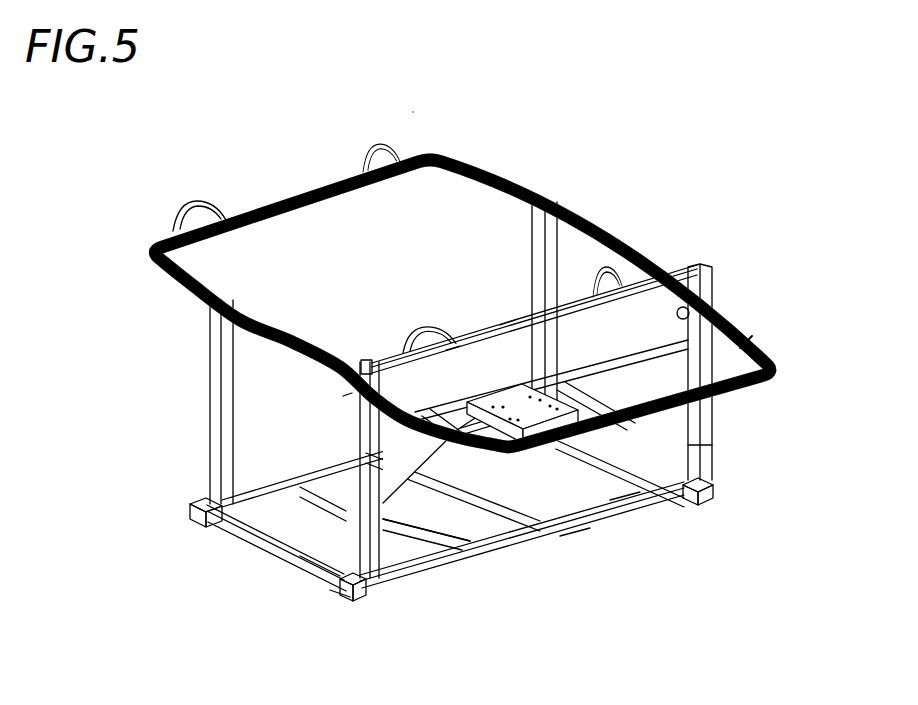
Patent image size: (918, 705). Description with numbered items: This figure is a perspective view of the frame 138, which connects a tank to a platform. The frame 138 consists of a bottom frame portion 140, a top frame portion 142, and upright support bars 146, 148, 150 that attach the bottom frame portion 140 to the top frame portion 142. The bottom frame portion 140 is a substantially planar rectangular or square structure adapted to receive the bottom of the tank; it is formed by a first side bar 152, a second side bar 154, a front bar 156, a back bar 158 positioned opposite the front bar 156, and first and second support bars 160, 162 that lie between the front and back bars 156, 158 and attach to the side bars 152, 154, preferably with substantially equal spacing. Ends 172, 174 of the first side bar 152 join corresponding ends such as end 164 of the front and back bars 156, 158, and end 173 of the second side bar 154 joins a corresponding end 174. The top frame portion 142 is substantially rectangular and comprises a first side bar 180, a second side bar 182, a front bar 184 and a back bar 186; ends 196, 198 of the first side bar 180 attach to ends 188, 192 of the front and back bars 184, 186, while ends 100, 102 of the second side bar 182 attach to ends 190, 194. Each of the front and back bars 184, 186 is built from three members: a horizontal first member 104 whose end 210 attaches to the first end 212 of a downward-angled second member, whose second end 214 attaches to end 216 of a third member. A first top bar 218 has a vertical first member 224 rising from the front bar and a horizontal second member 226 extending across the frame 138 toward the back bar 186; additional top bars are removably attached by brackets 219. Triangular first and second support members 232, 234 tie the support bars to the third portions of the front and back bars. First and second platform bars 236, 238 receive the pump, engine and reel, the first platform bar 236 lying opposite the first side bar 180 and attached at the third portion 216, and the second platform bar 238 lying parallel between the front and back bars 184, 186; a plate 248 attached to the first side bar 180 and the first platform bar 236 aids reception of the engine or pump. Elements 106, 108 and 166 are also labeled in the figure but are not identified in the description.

The end of second side bar 100 is at (166, 232).
The end of second side bar 102 is at (433, 148).
The first member 104 is at (190, 280).
The handle rear segment 106 is at (567, 213).
The panel 108 is at (407, 413).
The frame 138 is at (413, 108).
The bottom frame portion 140 is at (190, 575).
The top frame portion 142 is at (690, 212).
The support bar 146 is at (713, 462).
The support bar 148 is at (207, 440).
The support bar 150 is at (532, 225).
The first side bar 152 is at (612, 534).
The second side bar 154 is at (337, 460).
The front bar 156 is at (285, 566).
The back bar 158 is at (713, 452).
The first support bar 160 is at (233, 543).
The second support bar 162 is at (483, 520).
The end of front bar 164 is at (341, 592).
The right base member 166 is at (713, 482).
The end of first side bar 172 is at (352, 588).
The end of second side bar 173 is at (192, 500).
The end of first side bar 174 is at (217, 537).
The first side bar 180 is at (760, 397).
The second side bar 182 is at (287, 190).
The front bar 184 is at (197, 290).
The back bar 186 is at (548, 160).
The end of front bar 188 is at (577, 520).
The end of front bar 190 is at (140, 255).
The end of back bar 192 is at (788, 378).
The end of back bar 194 is at (323, 582).
The end of first side bar 196 is at (638, 508).
The end of first side bar 198 is at (775, 385).
The end of first member 210 is at (595, 225).
The first end of second member 212 is at (612, 235).
The second end of second member 214 is at (337, 370).
The end of third member 216 is at (370, 397).
The first top bar 218 is at (507, 320).
The brackets 219 is at (183, 203).
The first member of first top bar 224 is at (347, 366).
The second member of first top bar 226 is at (453, 347).
The first support member 232 is at (410, 555).
The second support member 234 is at (750, 342).
The first platform bar 236 is at (598, 370).
The second platform bar 238 is at (712, 432).
The plate 248 is at (515, 398).